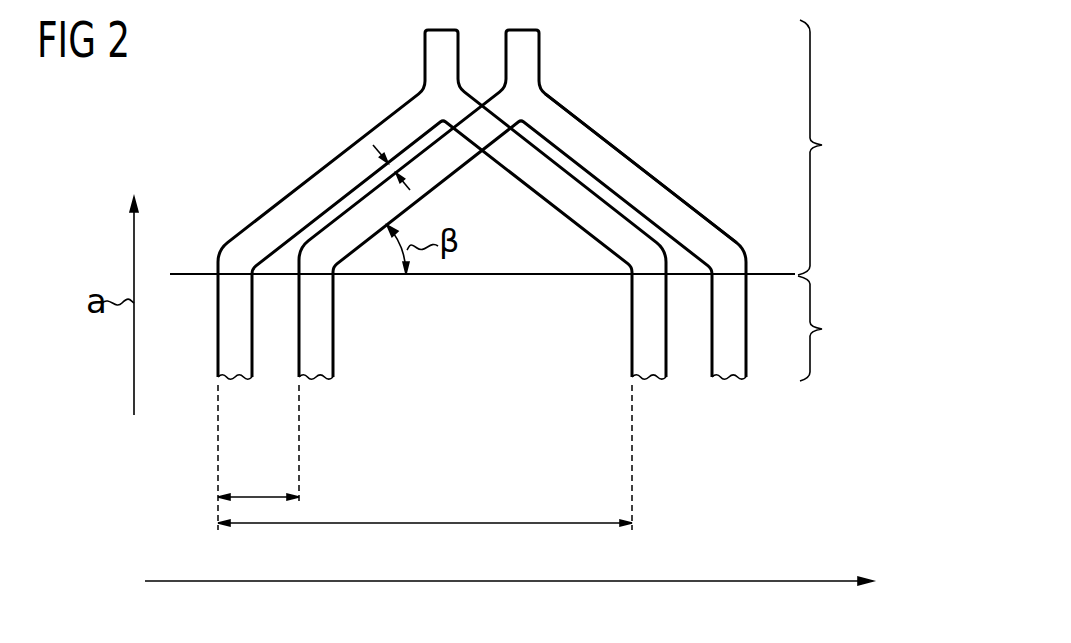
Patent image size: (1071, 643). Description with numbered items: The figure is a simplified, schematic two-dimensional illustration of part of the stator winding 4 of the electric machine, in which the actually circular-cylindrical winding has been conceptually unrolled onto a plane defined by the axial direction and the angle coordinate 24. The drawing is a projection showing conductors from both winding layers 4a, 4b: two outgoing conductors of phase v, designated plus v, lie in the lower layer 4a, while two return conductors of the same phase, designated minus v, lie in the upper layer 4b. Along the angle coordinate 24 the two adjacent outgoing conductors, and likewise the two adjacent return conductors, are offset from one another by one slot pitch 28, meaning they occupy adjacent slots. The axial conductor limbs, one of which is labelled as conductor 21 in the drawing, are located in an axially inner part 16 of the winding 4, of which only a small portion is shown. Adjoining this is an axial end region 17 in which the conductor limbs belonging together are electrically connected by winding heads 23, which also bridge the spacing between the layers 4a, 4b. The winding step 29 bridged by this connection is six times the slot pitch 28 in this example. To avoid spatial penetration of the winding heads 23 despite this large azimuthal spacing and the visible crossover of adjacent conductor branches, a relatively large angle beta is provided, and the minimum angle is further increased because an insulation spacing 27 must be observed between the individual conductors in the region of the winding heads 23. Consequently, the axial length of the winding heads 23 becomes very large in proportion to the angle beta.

The stator winding 4 is at (252, 90).
The lower layer 4a is at (304, 354).
The upper layer 4b is at (751, 383).
The axially inner part 16 is at (823, 328).
The axial end region 17 is at (823, 147).
The electrode finger 21 is at (346, 326).
The winding heads 23 is at (629, 137).
The angle coordinate 24 is at (705, 581).
The insulation spacing 27 is at (386, 174).
The slot pitch 28 is at (258, 497).
The winding step 29 is at (443, 523).